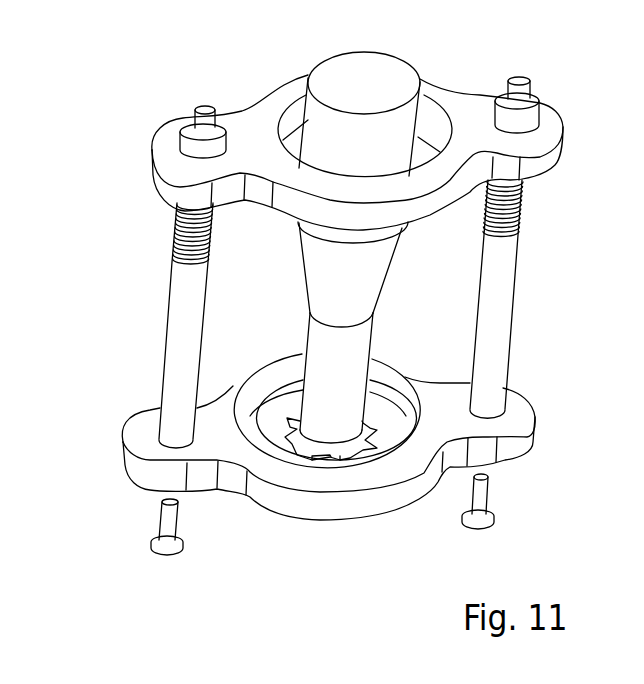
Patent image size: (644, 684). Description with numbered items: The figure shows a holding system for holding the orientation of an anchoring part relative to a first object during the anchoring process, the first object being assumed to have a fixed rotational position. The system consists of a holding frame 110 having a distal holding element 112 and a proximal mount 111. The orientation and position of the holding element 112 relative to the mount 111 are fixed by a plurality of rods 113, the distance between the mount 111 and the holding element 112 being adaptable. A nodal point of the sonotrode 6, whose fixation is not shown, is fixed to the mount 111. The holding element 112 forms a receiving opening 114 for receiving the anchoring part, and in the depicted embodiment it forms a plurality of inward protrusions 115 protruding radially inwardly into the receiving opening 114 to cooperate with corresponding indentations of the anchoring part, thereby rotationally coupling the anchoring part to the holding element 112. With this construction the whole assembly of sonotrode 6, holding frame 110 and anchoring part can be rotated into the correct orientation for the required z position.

The holding frame 110 is at (300, 303).
The proximal mount 111 is at (357, 116).
The distal holding element 112 is at (328, 470).
The rods 113 is at (284, 367).
The receiving opening 114 is at (297, 511).
The inward protrusions 115 is at (306, 530).
The sonotrode 6 is at (436, 247).